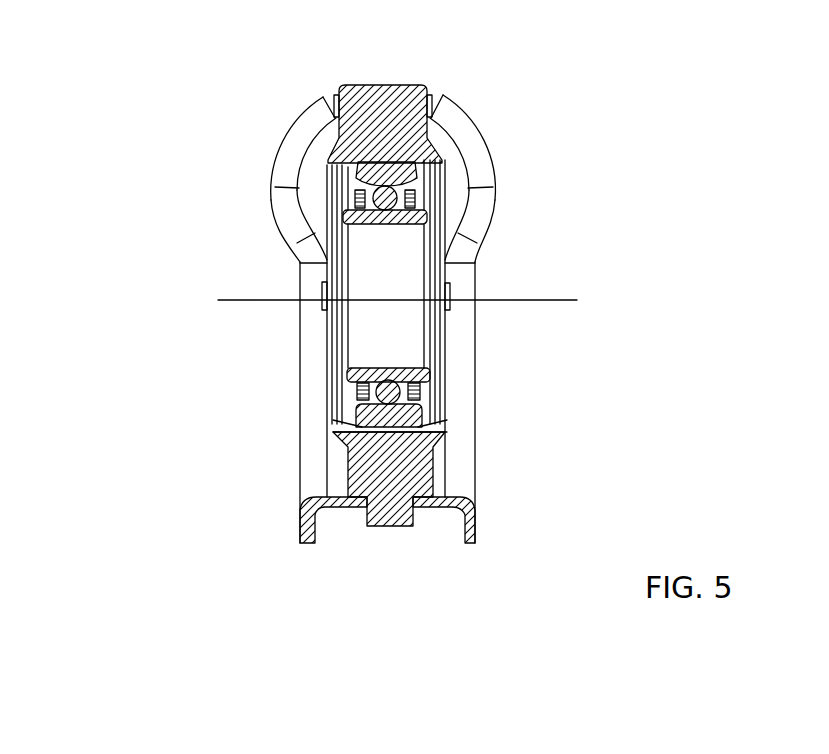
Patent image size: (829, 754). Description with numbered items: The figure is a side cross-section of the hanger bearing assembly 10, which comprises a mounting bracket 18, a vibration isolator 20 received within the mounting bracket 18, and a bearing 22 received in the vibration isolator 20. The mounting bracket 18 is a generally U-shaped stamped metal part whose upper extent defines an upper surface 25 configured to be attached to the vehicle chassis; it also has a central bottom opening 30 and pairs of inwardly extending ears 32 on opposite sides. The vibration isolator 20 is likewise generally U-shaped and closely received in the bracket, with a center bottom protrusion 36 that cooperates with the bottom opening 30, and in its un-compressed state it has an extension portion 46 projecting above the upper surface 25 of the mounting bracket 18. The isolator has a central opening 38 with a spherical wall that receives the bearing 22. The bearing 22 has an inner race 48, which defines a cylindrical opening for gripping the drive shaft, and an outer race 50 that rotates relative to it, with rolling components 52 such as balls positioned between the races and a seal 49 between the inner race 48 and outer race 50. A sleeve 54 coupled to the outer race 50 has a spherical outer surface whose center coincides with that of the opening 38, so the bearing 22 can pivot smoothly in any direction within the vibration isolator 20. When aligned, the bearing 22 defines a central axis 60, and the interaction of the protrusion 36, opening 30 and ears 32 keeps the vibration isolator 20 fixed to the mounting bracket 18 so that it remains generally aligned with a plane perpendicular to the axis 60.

The bearing assembly 10 is at (131, 491).
The mounting bracket 18 is at (478, 133).
The vibration isolator 20 is at (417, 93).
The bearing 22 is at (316, 198).
The upper surface 25 is at (337, 97).
The bottom opening 30 is at (387, 534).
The ears 32 is at (322, 291).
The center bottom protrusion 36 is at (403, 527).
The central opening 38 is at (420, 203).
The extension portion 46 is at (347, 85).
The inner race 48 is at (367, 227).
The seal 49 is at (420, 389).
The outer race 50 is at (380, 190).
The rolling components 52 is at (393, 213).
The sleeve 54 is at (380, 167).
The central axis 60 is at (547, 298).